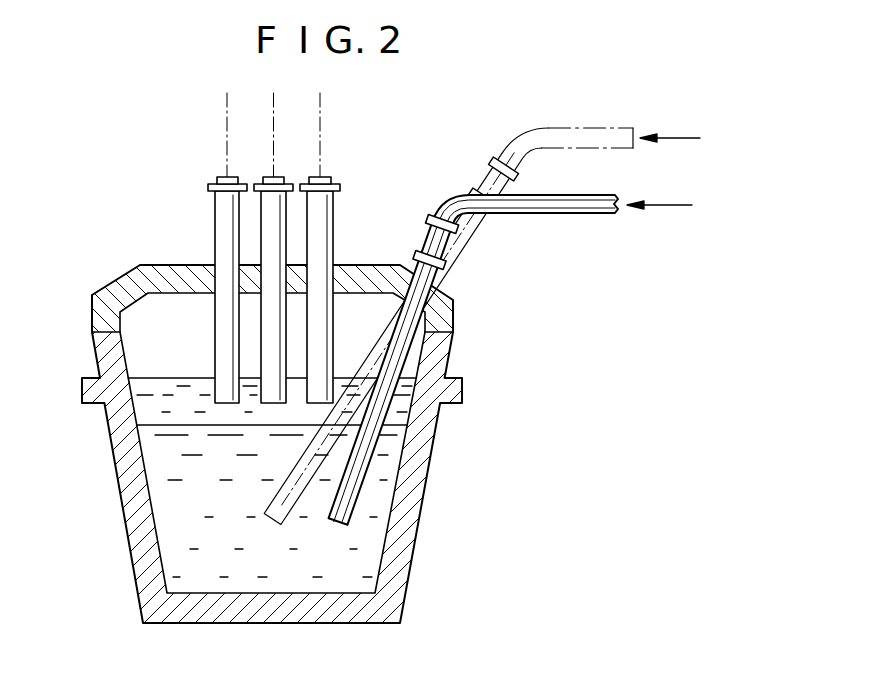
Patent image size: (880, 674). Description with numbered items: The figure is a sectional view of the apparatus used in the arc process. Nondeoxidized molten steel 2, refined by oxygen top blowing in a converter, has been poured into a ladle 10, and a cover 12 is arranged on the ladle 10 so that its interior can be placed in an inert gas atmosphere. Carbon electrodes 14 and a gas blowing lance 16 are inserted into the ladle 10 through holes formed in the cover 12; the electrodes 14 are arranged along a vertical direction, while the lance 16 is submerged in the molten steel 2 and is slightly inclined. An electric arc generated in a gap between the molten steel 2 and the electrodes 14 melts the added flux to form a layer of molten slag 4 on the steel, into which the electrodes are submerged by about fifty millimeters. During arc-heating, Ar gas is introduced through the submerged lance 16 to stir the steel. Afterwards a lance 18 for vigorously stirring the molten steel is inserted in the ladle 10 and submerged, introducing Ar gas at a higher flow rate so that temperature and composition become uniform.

The molten steel 2 is at (374, 477).
The molten slag 4 is at (160, 392).
The ladle 10 is at (412, 526).
The cover 12 is at (455, 306).
The carbon electrodes 14 is at (215, 228).
The gas blowing lance 16 is at (336, 526).
The lance 18 is at (272, 496).